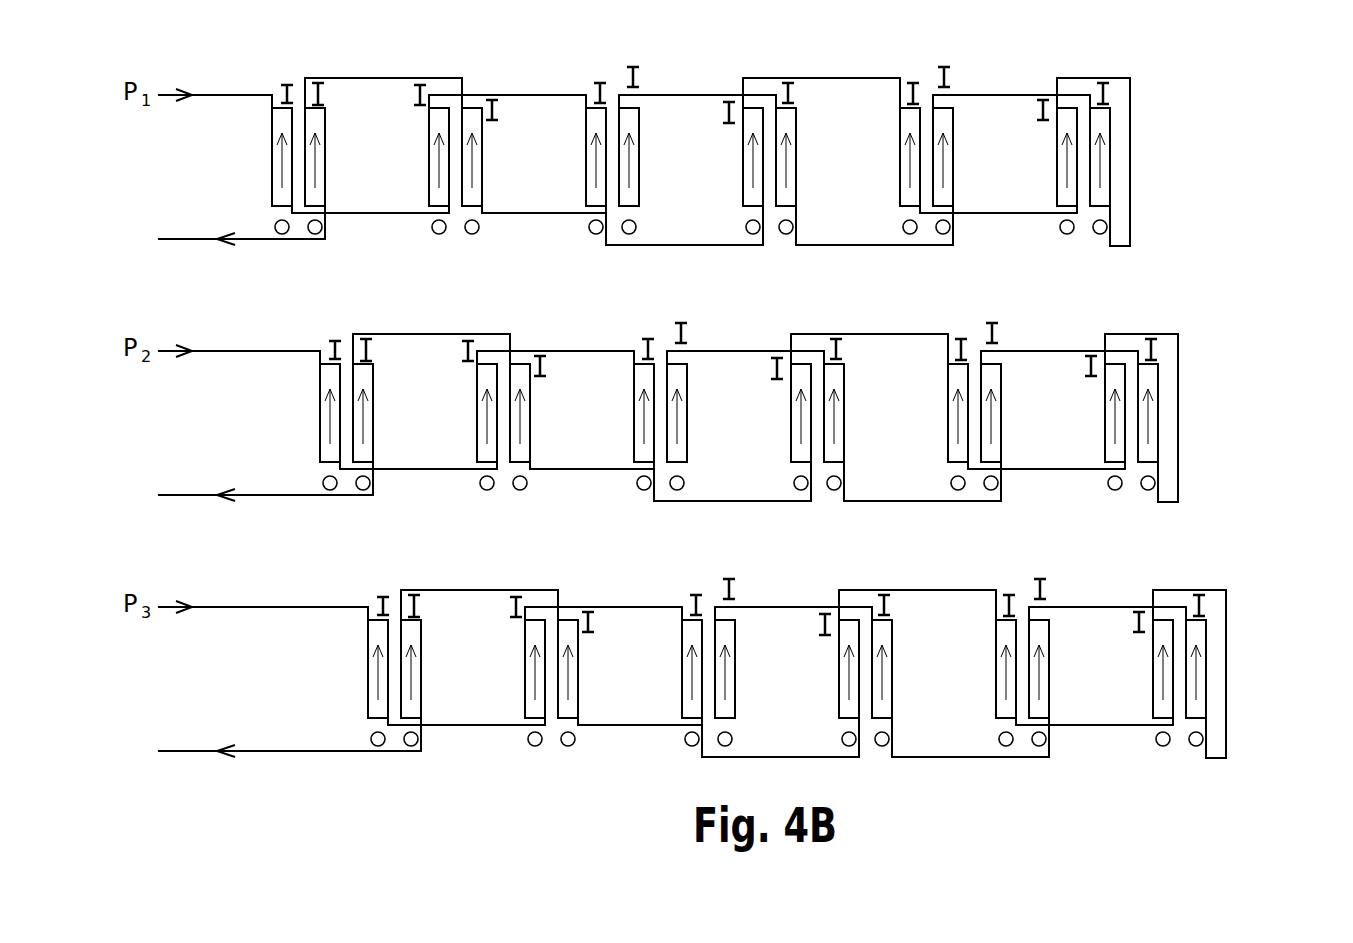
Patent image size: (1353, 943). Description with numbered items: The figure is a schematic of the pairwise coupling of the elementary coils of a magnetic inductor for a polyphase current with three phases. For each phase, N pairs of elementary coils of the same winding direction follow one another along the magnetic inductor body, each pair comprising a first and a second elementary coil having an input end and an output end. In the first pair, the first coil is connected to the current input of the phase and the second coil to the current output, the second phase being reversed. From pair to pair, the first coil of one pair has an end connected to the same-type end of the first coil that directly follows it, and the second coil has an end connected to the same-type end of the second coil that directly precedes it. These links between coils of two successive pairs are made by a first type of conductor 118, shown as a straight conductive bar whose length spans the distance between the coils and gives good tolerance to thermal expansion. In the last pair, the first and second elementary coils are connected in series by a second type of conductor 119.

The first type of conductor 118 is at (383, 215).
The second type of conductor 119 is at (1130, 185).